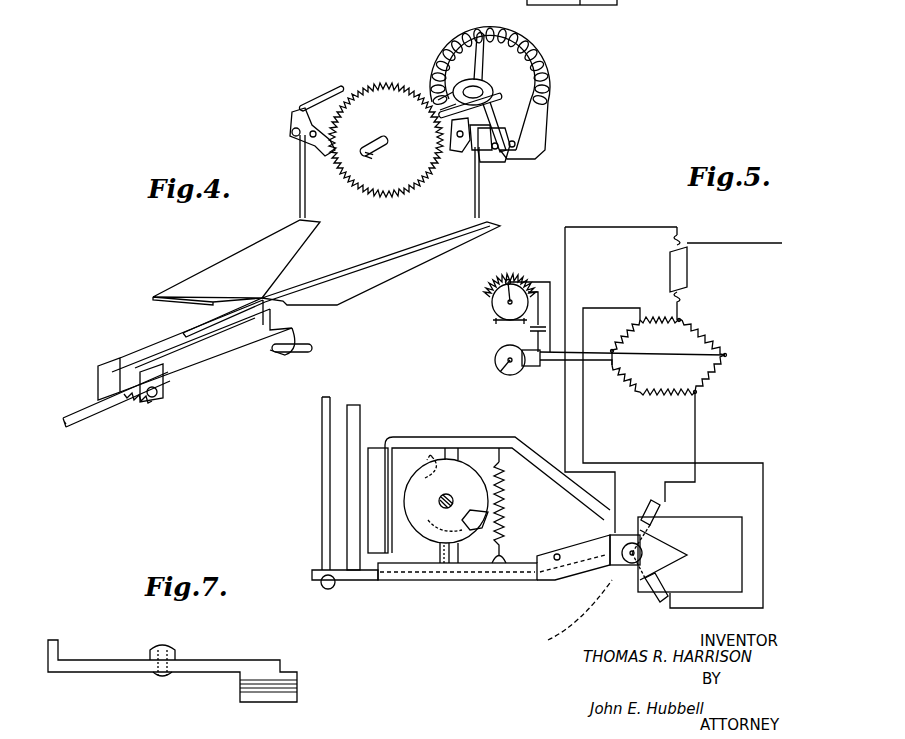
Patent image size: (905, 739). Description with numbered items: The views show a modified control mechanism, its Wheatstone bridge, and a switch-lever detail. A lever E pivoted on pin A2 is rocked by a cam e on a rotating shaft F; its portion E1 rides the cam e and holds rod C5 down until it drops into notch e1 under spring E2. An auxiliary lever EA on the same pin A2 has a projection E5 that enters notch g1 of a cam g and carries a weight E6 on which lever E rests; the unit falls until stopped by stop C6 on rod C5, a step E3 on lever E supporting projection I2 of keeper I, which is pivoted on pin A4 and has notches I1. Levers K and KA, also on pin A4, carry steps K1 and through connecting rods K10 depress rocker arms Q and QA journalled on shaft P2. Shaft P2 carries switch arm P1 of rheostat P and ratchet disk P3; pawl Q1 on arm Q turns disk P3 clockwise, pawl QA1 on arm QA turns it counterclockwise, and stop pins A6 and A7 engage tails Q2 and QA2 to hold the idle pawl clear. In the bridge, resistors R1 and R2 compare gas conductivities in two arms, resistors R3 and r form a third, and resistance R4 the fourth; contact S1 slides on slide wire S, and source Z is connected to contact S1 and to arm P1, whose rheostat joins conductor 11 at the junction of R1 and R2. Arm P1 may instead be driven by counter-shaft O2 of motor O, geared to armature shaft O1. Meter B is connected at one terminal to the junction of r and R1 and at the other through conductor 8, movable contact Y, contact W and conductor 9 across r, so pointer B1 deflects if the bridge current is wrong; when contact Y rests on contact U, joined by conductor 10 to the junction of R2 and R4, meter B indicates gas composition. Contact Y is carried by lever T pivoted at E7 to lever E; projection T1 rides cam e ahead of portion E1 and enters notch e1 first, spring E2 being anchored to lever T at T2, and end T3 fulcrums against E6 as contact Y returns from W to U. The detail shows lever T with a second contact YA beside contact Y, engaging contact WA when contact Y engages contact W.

In FIG. 4, the contact W is at (600, 5).
In FIG. 5, the contact W is at (650, 600).
In FIG. 4, the contact WA is at (585, 5).
In FIG. 4, the stop pin A6 is at (548, 115).
In FIG. 4, the shaft P2 is at (458, 90).
In FIG. 4, the switch arm P1 is at (482, 62).
In FIG. 5, the switch arm P1 is at (515, 280).
In FIG. 4, the rheostat P is at (505, 113).
In FIG. 5, the rheostat P is at (511, 270).
In FIG. 4, the pawl Q1 is at (460, 152).
In FIG. 4, the cam tail Q2 is at (470, 150).
In FIG. 4, the rocker arm Q is at (505, 152).
In FIG. 4, the connecting rod K10 is at (480, 195).
In FIG. 4, the rocker arm QA is at (292, 126).
In FIG. 4, the stop pin A7 is at (318, 100).
In FIG. 4, the cam tail QA2 is at (300, 110).
In FIG. 4, the pawl QA1 is at (318, 148).
In FIG. 4, the ratchet disk P3 is at (382, 175).
In FIG. 4, the lever KA is at (120, 357).
In FIG. 4, the lever K is at (195, 370).
In FIG. 4, the keeper I is at (228, 366).
In FIG. 4, the projection I2 is at (75, 410).
In FIG. 4, the steps K1 is at (157, 400).
In FIG. 4, the notches I1 is at (130, 403).
In FIG. 4, the pivot pin A4 is at (300, 353).
In FIG. 5, the conductor 8 is at (566, 258).
In FIG. 5, the meter B is at (690, 268).
In FIG. 5, the pointer B1 is at (772, 243).
In FIG. 5, the resistance r is at (663, 318).
In FIG. 5, the resistor R3 is at (620, 341).
In FIG. 5, the resistor R1 is at (722, 340).
In FIG. 5, the resistor R2 is at (718, 372).
In FIG. 5, the resistance R4 is at (628, 385).
In FIG. 5, the conductor 9 is at (764, 530).
In FIG. 5, the conductor 10 is at (706, 443).
In FIG. 5, the contact U is at (665, 508).
In FIG. 5, the motor O is at (492, 302).
In FIG. 5, the counter-shaft O2 is at (498, 290).
In FIG. 5, the armature shaft O1 is at (500, 305).
In FIG. 5, the conductor 11 is at (540, 292).
In FIG. 5, the source of current Z is at (530, 328).
In FIG. 5, the slide wire resistance S is at (497, 362).
In FIG. 5, the contact S1 is at (503, 348).
In FIG. 5, the rod C5 is at (322, 450).
In FIG. 5, the step E3 is at (362, 410).
In FIG. 5, the stop C6 is at (320, 583).
In FIG. 5, the weighted projection E6 is at (370, 498).
In FIG. 5, the projection E5 is at (470, 440).
In FIG. 5, the auxiliary lever EA is at (530, 452).
In FIG. 5, the lever E is at (348, 580).
In FIG. 5, the shaft F is at (440, 500).
In FIG. 5, the cam notch g1 is at (438, 490).
In FIG. 5, the cam e is at (448, 477).
In FIG. 5, the cam notch e1 is at (478, 514).
In FIG. 5, the cam g is at (457, 540).
In FIG. 5, the spring E2 is at (505, 512).
In FIG. 5, the spring connection T2 is at (506, 557).
In FIG. 5, the lever end T3 is at (397, 578).
In FIG. 5, the cam engaging portion E1 is at (440, 566).
In FIG. 5, the projection T1 is at (462, 565).
In FIG. 7, the projection T1 is at (62, 642).
In FIG. 5, the lever T is at (597, 545).
In FIG. 7, the lever T is at (205, 660).
In FIG. 5, the pivot E7 is at (557, 562).
In FIG. 7, the pivot E7 is at (160, 675).
In FIG. 5, the pivot pin A2 is at (580, 610).
In FIG. 5, the movable switch contact Y is at (626, 570).
In FIG. 7, the movable switch contact Y is at (300, 702).
In FIG. 7, the contact YA is at (292, 670).